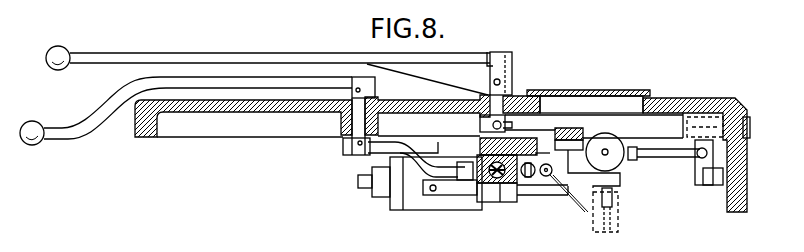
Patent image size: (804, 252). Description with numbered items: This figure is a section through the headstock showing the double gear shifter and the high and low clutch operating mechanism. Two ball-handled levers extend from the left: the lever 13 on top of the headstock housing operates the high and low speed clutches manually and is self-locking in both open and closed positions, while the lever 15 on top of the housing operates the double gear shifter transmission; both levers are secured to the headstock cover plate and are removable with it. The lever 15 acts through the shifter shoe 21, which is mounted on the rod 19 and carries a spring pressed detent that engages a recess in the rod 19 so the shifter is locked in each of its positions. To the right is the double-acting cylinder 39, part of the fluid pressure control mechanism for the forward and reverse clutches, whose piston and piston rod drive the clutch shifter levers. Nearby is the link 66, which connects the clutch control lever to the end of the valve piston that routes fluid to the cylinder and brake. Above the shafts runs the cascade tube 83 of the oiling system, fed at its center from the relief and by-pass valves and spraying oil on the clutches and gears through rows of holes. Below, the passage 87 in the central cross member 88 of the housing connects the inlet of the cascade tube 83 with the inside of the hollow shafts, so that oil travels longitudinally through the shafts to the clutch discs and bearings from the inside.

The lever 13 is at (148, 53).
The lever 15 is at (81, 121).
The rod 19 is at (500, 185).
The shifter shoe 21 is at (483, 187).
The double-acting cylinder 39 is at (620, 138).
The link 66 is at (528, 178).
The cascade tube 83 is at (547, 164).
The passage 87 is at (618, 220).
The central cross member 88 is at (620, 205).